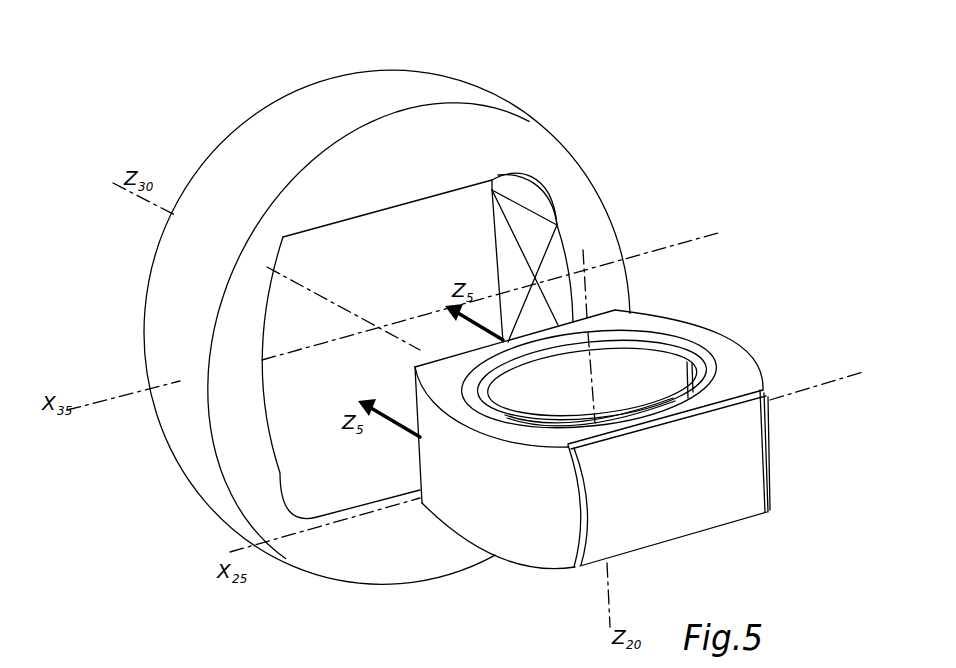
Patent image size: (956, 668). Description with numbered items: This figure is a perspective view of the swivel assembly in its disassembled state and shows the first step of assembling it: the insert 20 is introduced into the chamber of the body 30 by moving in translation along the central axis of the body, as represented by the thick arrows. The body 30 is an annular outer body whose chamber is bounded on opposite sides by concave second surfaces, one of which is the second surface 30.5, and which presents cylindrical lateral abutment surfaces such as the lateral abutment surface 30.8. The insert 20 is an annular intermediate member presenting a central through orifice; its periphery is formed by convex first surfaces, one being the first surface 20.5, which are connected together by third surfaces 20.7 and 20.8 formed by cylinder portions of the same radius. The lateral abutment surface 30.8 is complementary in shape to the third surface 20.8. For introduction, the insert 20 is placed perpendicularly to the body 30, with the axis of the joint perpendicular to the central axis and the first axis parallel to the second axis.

The body 30 is at (520, 97).
The second surface 30.5 is at (319, 490).
The lateral abutment surface 30.8 is at (532, 232).
The insert 20 is at (732, 330).
The first surface 20.5 is at (683, 470).
The third surface 20.7 is at (525, 512).
The third surface 20.8 is at (764, 358).